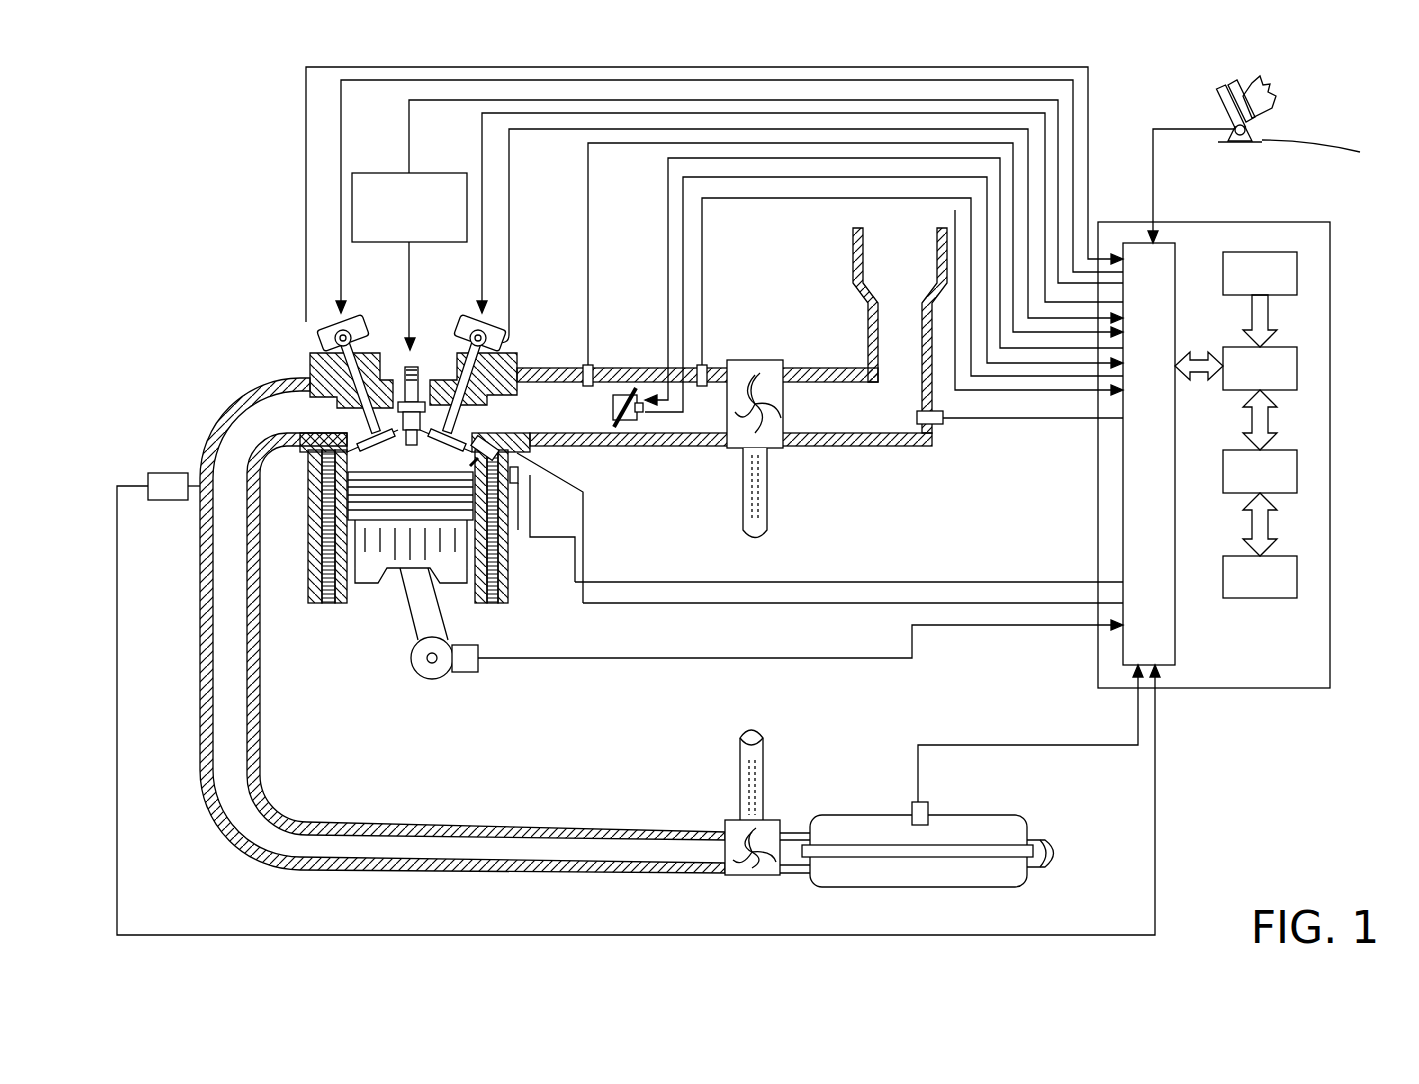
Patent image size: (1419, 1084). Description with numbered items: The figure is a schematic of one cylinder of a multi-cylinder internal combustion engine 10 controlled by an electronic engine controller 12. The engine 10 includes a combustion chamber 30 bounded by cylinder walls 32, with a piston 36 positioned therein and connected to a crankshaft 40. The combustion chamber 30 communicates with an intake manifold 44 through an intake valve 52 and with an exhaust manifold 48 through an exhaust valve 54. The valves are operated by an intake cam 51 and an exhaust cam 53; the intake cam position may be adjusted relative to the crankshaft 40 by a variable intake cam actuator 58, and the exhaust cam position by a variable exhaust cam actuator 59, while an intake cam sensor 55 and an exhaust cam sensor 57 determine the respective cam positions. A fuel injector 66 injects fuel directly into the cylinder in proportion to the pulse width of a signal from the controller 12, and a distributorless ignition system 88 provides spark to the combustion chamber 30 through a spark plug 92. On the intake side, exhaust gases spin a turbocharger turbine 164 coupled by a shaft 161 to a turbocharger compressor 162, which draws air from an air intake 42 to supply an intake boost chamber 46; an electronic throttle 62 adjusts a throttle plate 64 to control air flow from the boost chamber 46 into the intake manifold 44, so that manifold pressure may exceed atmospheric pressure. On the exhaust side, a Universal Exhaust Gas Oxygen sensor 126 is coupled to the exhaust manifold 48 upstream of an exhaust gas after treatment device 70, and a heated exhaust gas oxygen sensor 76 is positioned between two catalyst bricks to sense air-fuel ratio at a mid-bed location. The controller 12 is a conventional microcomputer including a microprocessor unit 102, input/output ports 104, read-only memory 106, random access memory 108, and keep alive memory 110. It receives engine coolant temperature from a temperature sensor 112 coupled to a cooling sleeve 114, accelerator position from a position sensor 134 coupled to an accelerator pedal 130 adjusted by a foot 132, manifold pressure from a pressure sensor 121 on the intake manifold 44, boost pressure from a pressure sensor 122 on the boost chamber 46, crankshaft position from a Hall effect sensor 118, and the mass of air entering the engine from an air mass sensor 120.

The internal combustion engine 10 is at (238, 300).
The electronic engine controller 12 is at (1325, 222).
The combustion chamber 30 is at (410, 452).
The cylinder walls 32 is at (350, 603).
The piston 36 is at (393, 555).
The crankshaft 40 is at (423, 678).
The air intake 42 is at (885, 277).
The intake manifold 44 is at (550, 420).
The intake boost chamber 46 is at (685, 420).
The exhaust manifold 48 is at (263, 427).
The intake cam 51 is at (476, 318).
The intake valve 52 is at (452, 429).
The exhaust cam 53 is at (346, 321).
The exhaust valve 54 is at (372, 432).
The intake cam sensor 55 is at (487, 348).
The exhaust cam sensor 57 is at (335, 340).
The variable intake cam actuator 58 is at (466, 338).
The variable exhaust cam actuator 59 is at (358, 338).
The electronic throttle 62 is at (619, 372).
The throttle plate 64 is at (636, 388).
The fuel injector 66 is at (518, 473).
The exhaust gas after treatment device 70 is at (876, 887).
The heated exhaust gas oxygen sensor 76 is at (926, 803).
The distributorless ignition system 88 is at (367, 173).
The spark plug 92 is at (414, 368).
The microprocessor unit 102 is at (1297, 375).
The input/output ports 104 is at (1177, 250).
The read-only memory 106 is at (1297, 272).
The random access memory 108 is at (1297, 472).
The keep alive memory 110 is at (1297, 577).
The temperature sensor 112 is at (514, 487).
The cooling sleeve 114 is at (500, 575).
The Hall effect sensor 118 is at (461, 675).
The air mass sensor 120 is at (942, 422).
The pressure sensor 121 is at (583, 368).
The pressure sensor 122 is at (705, 365).
The Universal Exhaust Gas Oxygen sensor 126 is at (150, 478).
The accelerator pedal 130 is at (1235, 103).
The foot 132 is at (1262, 84).
The position sensor 134 is at (1329, 152).
The shaft 161 is at (743, 480).
The turbocharger compressor 162 is at (757, 360).
The turbocharger turbine 164 is at (730, 818).